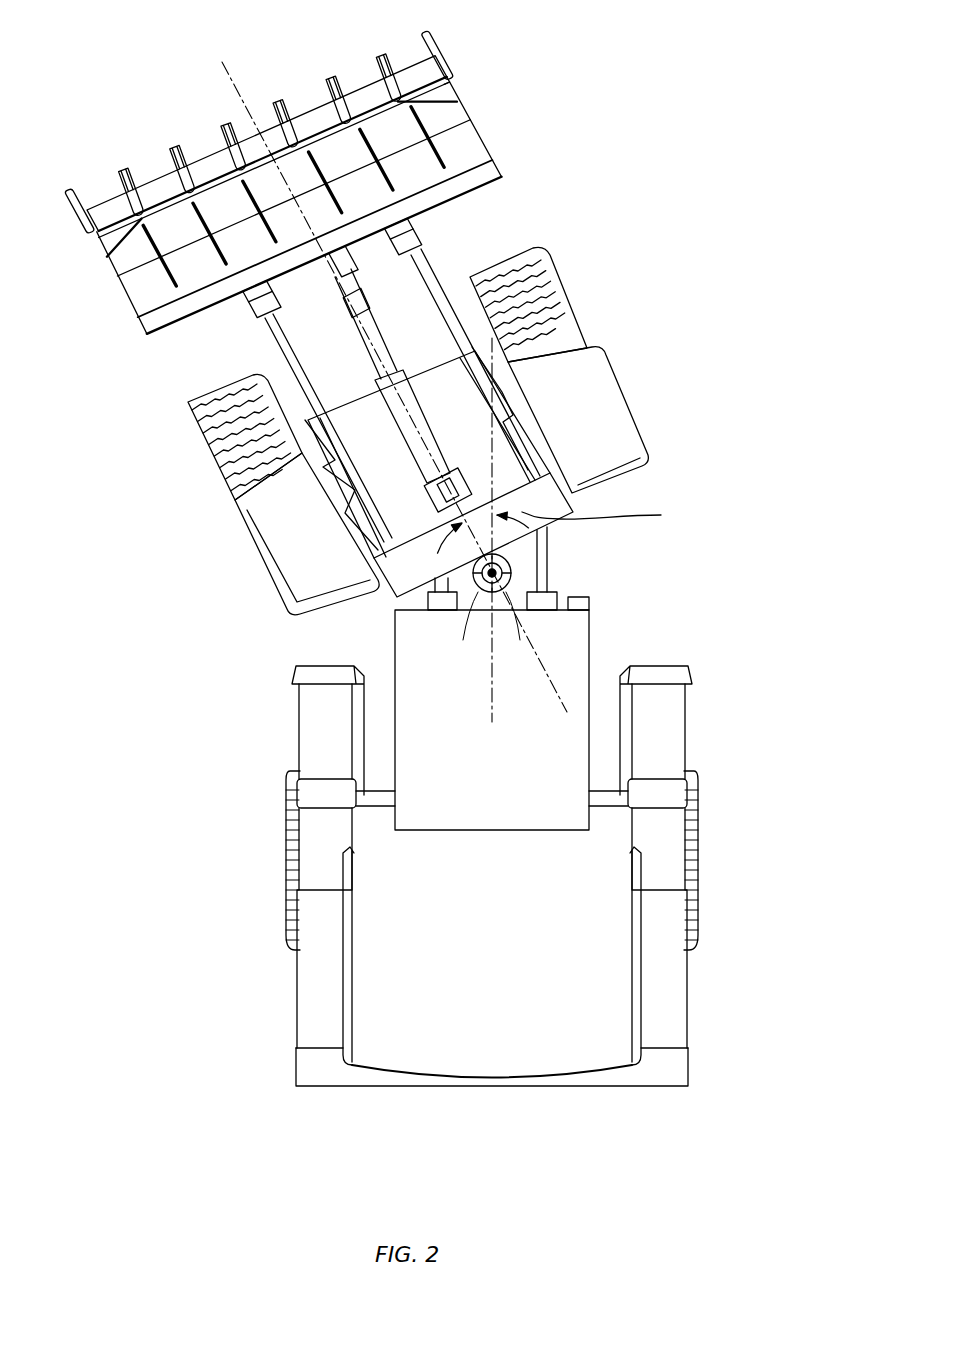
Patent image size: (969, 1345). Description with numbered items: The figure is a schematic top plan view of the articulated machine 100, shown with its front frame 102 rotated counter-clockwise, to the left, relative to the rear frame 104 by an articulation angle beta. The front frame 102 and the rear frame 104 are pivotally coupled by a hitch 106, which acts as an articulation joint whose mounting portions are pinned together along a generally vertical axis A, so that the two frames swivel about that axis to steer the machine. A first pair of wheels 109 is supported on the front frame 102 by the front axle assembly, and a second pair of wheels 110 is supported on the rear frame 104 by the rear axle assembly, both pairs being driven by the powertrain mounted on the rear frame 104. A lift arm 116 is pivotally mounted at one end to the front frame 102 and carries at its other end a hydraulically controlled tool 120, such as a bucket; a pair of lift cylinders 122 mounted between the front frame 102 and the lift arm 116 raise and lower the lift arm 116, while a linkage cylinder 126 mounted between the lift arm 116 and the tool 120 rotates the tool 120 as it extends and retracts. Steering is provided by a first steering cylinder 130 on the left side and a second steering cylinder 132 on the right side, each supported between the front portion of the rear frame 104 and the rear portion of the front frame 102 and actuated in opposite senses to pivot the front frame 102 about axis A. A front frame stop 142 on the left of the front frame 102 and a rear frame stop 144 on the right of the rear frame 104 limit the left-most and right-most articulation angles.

The articulated machine 100 is at (710, 82).
The front frame 102 is at (606, 466).
The rear frame 104 is at (678, 1020).
The hitch 106 is at (512, 573).
The first pair of wheels 109 is at (567, 302).
The second pair of wheels 110 is at (291, 832).
The lift arm 116 is at (503, 477).
The tool 120 is at (472, 125).
The lift cylinders 122 is at (423, 275).
The linkage cylinder 126 is at (352, 342).
The first steering cylinder 130 is at (440, 618).
The second steering cylinder 132 is at (548, 540).
The front frame stop 142 is at (430, 598).
The rear frame stop 144 is at (589, 603).